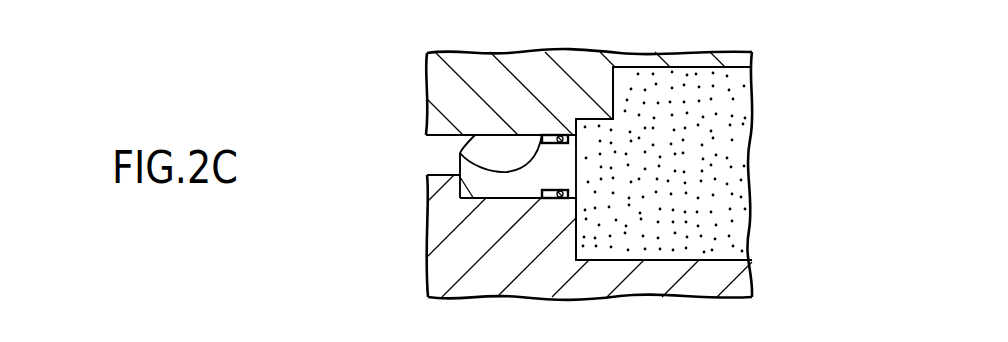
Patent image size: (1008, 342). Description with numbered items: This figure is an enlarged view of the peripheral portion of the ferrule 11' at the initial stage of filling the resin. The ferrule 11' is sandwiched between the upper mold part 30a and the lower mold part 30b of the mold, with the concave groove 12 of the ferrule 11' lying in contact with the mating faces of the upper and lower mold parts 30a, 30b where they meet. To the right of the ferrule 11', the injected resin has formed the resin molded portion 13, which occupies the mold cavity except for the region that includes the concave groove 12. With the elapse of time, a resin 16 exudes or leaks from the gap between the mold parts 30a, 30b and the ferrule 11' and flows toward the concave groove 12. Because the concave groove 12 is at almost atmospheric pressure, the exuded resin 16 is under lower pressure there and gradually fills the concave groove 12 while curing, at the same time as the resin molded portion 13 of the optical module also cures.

The ferrule 11' is at (501, 91).
The concave groove 12 is at (460, 157).
The resin molded portion 13 is at (740, 117).
The resin 16 is at (560, 198).
The upper mold part 30a is at (443, 78).
The lower mold part 30b is at (445, 262).